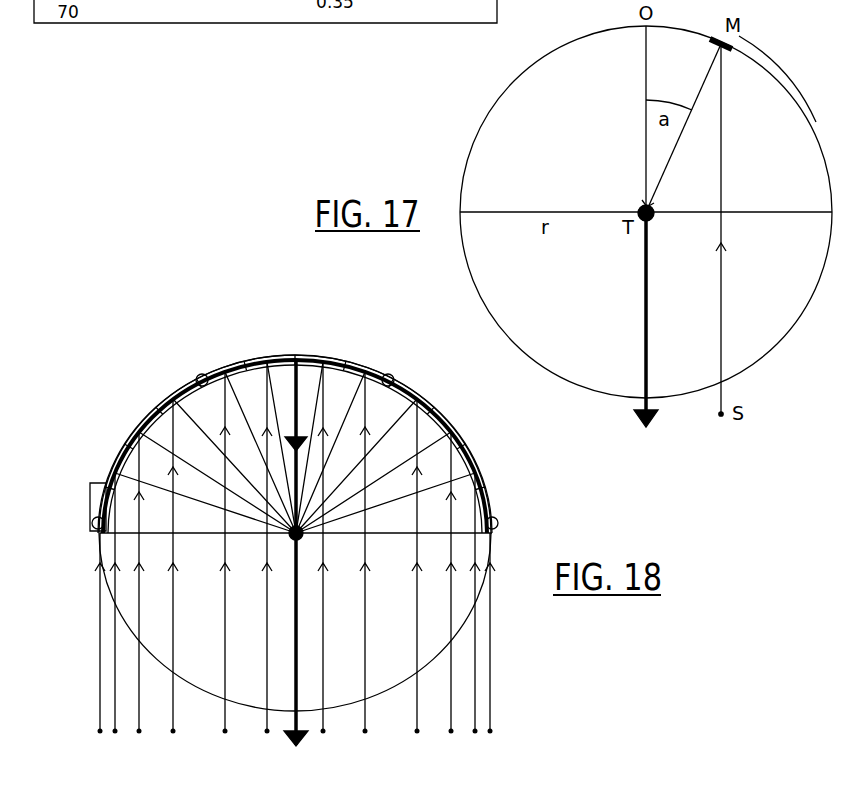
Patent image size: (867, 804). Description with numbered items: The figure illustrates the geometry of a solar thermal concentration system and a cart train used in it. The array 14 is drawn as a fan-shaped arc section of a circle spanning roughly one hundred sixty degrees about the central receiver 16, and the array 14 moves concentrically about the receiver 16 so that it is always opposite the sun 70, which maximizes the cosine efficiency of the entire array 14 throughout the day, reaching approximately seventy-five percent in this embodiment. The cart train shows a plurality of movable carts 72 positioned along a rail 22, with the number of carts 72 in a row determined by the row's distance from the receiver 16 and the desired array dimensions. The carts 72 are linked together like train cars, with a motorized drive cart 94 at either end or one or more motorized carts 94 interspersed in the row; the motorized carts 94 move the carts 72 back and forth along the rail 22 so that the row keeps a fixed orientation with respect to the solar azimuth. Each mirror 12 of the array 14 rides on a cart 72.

In FIG. 17, the reflector panel 12 is at (728, 48).
In FIG. 18, the reflector panel 12 is at (452, 412).
In FIG. 17, the array 14 is at (527, 108).
In FIG. 17, the receiver 16 is at (652, 218).
In FIG. 18, the rail 22 is at (100, 543).
In FIG. 17, the sun 70 is at (644, 334).
In FIG. 18, the sun 70 is at (294, 567).
In FIG. 17, the movable cart 72 is at (786, 87).
In FIG. 18, the movable cart 72 is at (128, 430).
In FIG. 18, the motorized drive cart 94 is at (207, 373).